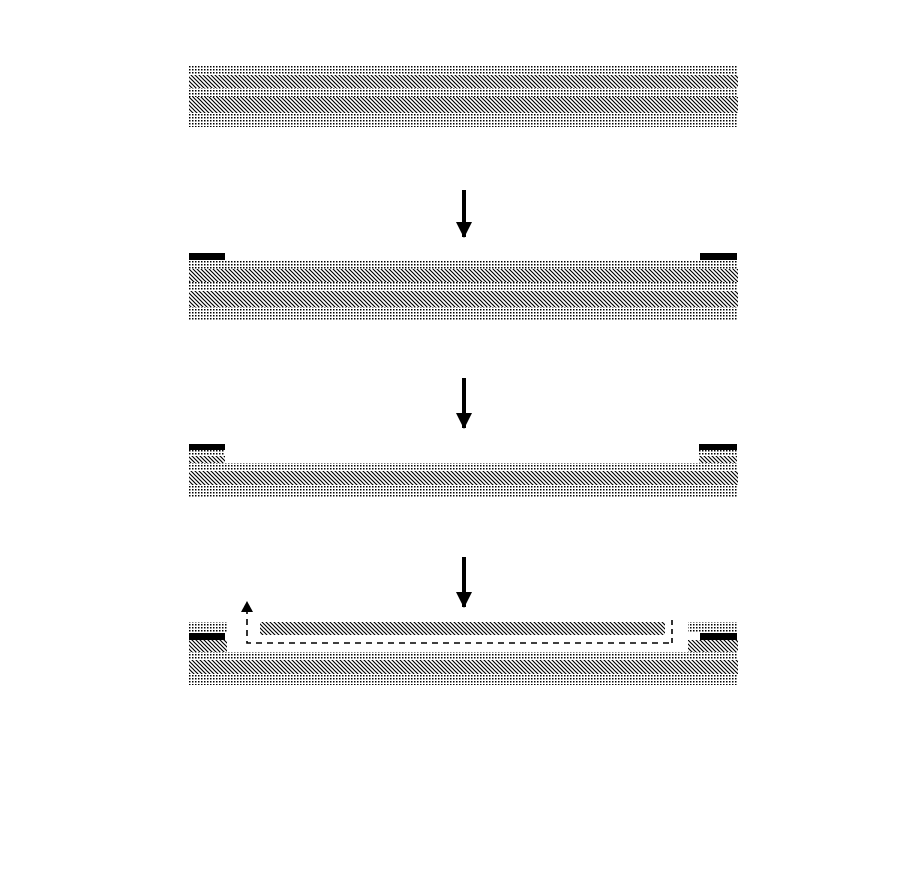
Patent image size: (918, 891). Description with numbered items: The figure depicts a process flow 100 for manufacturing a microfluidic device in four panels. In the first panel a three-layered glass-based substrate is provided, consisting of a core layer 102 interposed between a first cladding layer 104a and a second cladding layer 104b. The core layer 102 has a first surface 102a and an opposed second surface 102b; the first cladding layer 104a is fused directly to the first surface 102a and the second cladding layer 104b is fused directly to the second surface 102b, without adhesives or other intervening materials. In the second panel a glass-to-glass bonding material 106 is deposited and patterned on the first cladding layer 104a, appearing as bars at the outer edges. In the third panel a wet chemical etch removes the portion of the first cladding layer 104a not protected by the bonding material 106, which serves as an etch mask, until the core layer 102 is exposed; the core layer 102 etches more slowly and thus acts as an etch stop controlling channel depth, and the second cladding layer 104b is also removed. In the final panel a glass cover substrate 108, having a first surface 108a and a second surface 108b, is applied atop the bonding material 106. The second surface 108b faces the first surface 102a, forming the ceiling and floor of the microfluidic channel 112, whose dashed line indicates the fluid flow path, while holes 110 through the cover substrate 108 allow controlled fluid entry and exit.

The process flow 100 is at (93, 205).
The core layer 102 is at (420, 95).
The first surface of core layer 102a is at (389, 78).
The second surface of core layer 102b is at (368, 108).
The first cladding layer 104a is at (720, 72).
The second cladding layer 104b is at (720, 116).
The glass-to-glass bonding material 106 is at (738, 257).
The glass cover substrate 108 is at (523, 649).
The first surface of glass cover substrate 108a is at (361, 621).
The second surface of glass cover substrate 108b is at (370, 636).
The holes 110 is at (681, 619).
The microfluidic channel 112 is at (601, 642).